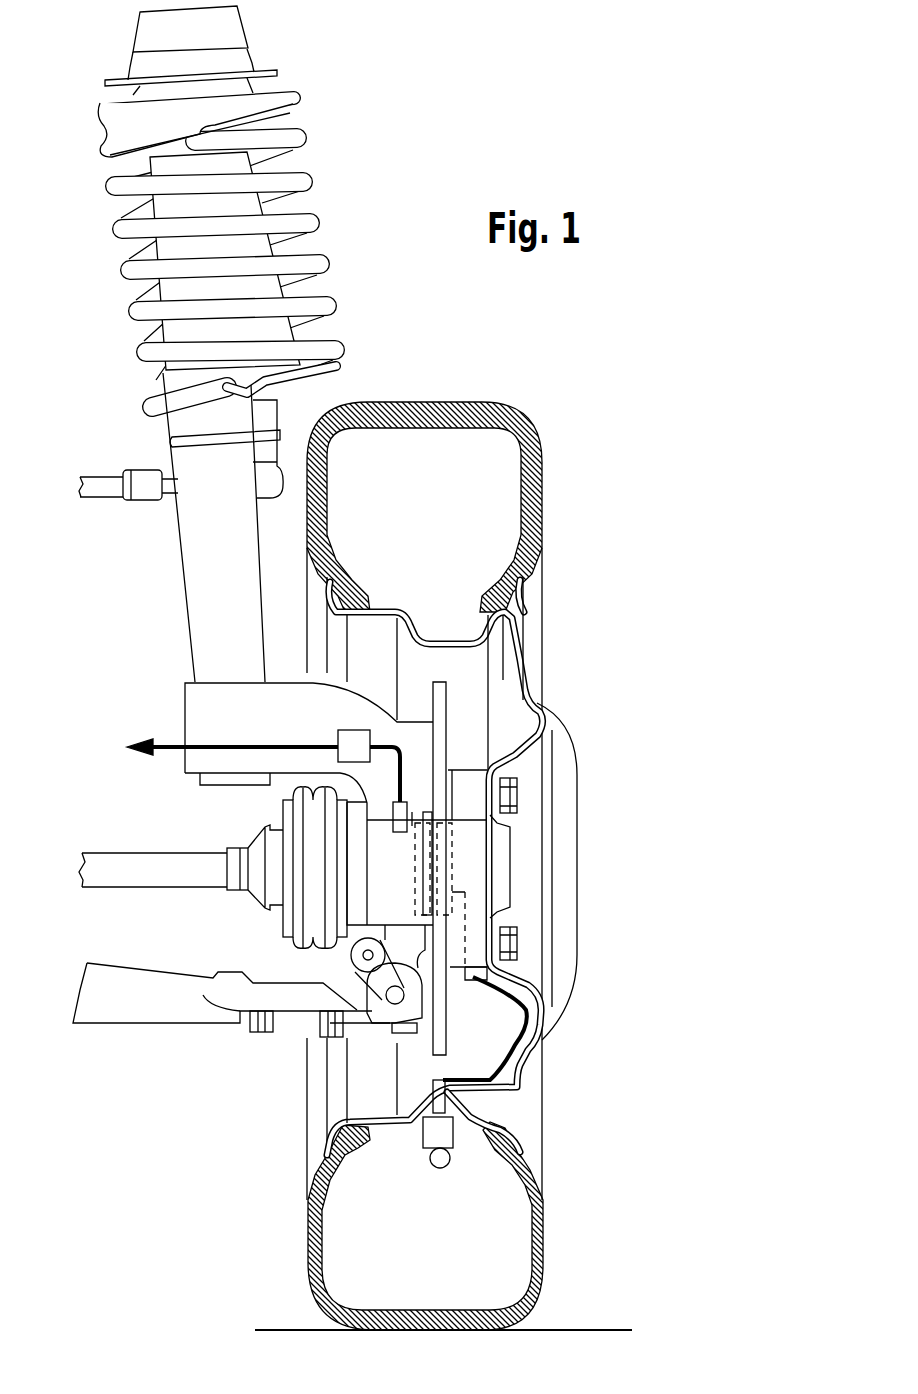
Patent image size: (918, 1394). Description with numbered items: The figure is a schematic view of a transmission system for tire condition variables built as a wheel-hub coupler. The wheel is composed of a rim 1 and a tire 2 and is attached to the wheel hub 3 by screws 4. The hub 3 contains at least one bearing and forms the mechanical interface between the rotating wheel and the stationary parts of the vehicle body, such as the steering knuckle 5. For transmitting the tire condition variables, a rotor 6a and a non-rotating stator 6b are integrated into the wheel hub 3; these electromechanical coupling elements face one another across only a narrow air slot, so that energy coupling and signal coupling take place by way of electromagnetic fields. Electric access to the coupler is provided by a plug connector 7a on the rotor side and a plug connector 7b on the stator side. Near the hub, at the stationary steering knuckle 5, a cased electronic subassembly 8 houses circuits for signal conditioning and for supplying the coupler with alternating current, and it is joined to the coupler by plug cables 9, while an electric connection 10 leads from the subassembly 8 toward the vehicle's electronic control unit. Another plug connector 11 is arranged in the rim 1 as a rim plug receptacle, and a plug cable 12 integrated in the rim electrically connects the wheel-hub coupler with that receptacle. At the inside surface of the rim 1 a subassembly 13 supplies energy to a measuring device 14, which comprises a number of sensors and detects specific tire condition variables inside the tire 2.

The rim 1 is at (537, 688).
The tire 2 is at (500, 447).
The wheel hub 3 is at (380, 832).
The screws 4 is at (512, 797).
The steering knuckle 5 is at (200, 698).
The rotor 6a is at (452, 842).
The stator 6b is at (410, 892).
The plug connector 7a is at (473, 977).
The plug connector 7b is at (412, 807).
The cased electronic subassembly 8 is at (355, 737).
The plug cables 9 is at (402, 755).
The electric connection 10 is at (172, 744).
The plug connector 11 is at (443, 1104).
The plug cable 12 is at (517, 1050).
The subassembly 13 is at (443, 1130).
The measuring device 14 is at (447, 1158).